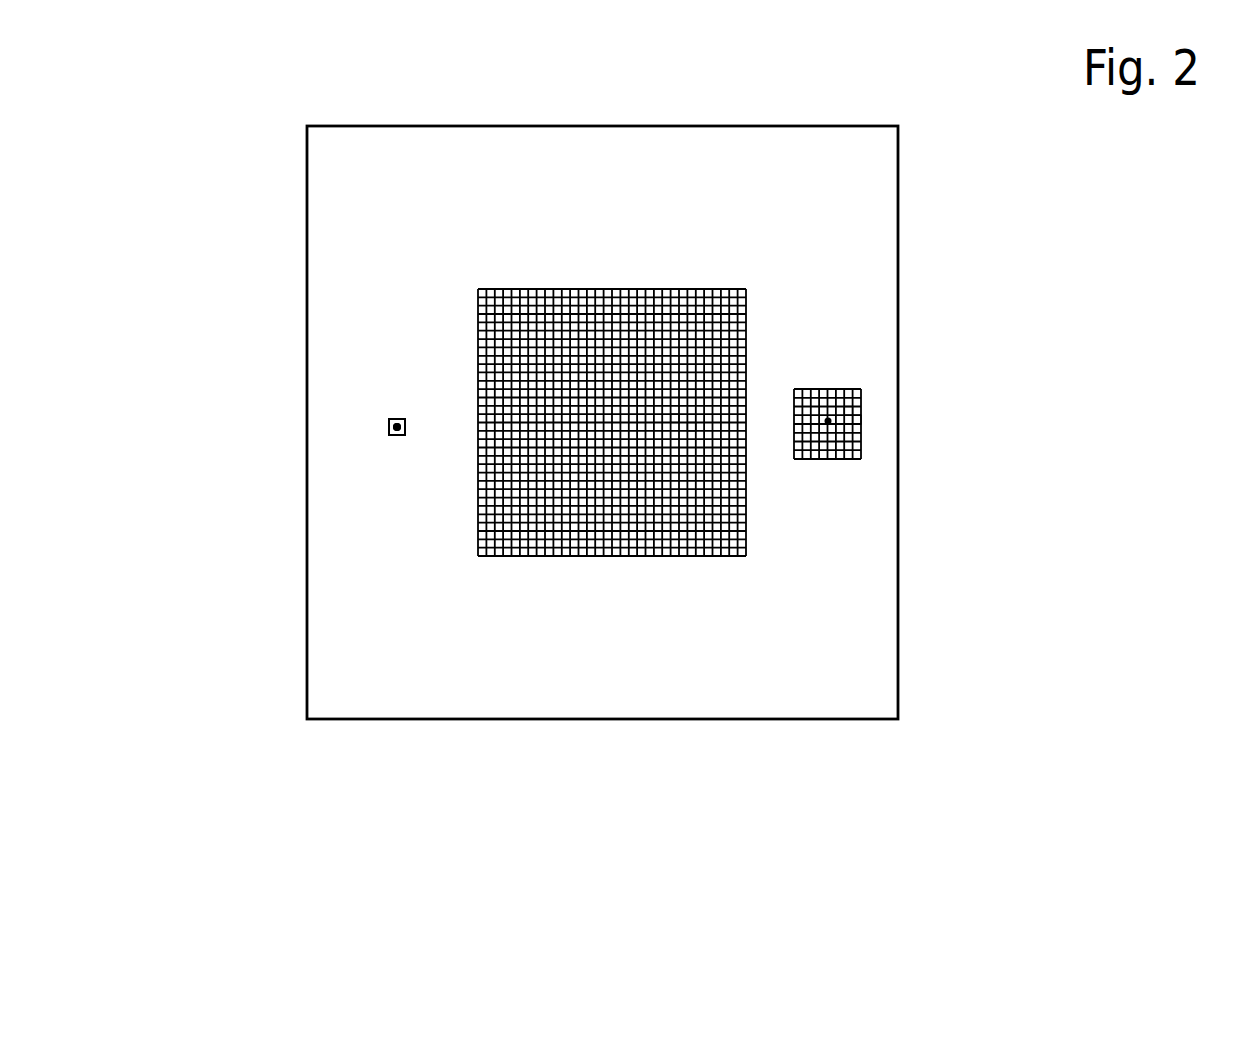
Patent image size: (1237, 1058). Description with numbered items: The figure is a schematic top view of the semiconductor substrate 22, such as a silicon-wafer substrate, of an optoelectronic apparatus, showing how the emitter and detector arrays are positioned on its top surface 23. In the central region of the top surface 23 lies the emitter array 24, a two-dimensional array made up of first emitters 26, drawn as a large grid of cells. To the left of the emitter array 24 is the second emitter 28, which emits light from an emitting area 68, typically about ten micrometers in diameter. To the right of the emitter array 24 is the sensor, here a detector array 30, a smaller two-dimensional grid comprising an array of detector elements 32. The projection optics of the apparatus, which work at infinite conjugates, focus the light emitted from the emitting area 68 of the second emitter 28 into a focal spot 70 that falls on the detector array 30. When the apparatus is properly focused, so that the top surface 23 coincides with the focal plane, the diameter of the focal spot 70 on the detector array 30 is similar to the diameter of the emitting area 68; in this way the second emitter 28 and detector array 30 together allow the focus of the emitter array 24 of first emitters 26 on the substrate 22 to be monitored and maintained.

The semiconductor substrate 22 is at (785, 719).
The top surface 23 is at (852, 573).
The emitter array 24 is at (547, 558).
The first emitters 26 is at (677, 415).
The second emitter 28 is at (389, 432).
The detector array 30 is at (823, 448).
The detector elements 32 is at (845, 408).
The emitting area 68 is at (389, 424).
The focal spot 70 is at (833, 422).